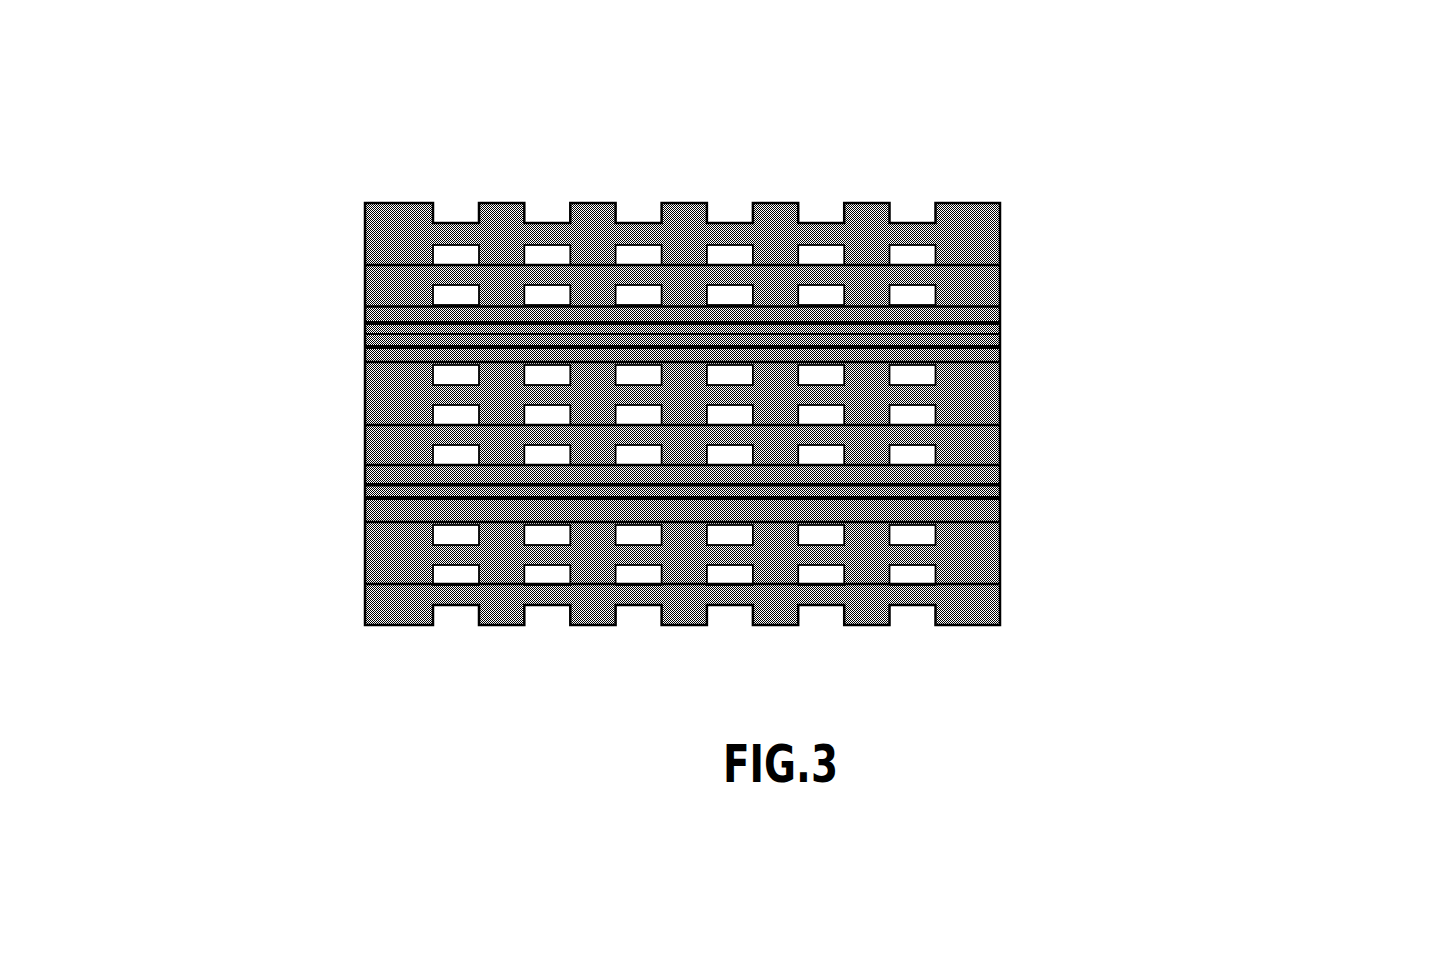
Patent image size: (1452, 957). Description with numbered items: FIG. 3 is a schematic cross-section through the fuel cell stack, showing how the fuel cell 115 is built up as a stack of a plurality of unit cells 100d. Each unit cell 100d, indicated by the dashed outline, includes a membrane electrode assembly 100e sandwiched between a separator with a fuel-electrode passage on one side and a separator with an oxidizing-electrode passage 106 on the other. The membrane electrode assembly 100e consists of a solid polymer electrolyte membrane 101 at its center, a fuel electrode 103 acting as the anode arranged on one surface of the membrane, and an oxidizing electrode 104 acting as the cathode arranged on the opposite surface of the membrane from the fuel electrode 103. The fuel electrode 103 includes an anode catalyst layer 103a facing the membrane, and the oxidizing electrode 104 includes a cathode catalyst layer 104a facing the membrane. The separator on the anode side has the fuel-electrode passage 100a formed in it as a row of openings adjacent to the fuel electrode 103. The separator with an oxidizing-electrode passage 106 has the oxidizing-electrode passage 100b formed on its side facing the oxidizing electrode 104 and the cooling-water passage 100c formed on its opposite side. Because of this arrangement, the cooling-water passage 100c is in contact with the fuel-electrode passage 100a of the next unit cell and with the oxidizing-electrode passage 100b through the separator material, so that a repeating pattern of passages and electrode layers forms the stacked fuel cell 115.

The fuel cell 115 is at (767, 332).
The fuel-electrode passage 100a is at (917, 298).
The oxidizing-electrode passage 100b is at (918, 373).
The cooling-water passage 100c is at (918, 416).
The unit cell 100d is at (767, 358).
The membrane electrode assembly 100e is at (679, 337).
The solid polymer electrolyte membrane 101 is at (365, 335).
The fuel electrode 103 is at (1008, 305).
The anode catalyst layer 103a is at (365, 325).
The oxidizing electrode 104 is at (1008, 338).
The cathode catalyst layer 104a is at (365, 345).
The separator with an oxidizing-electrode passage 106 is at (863, 434).